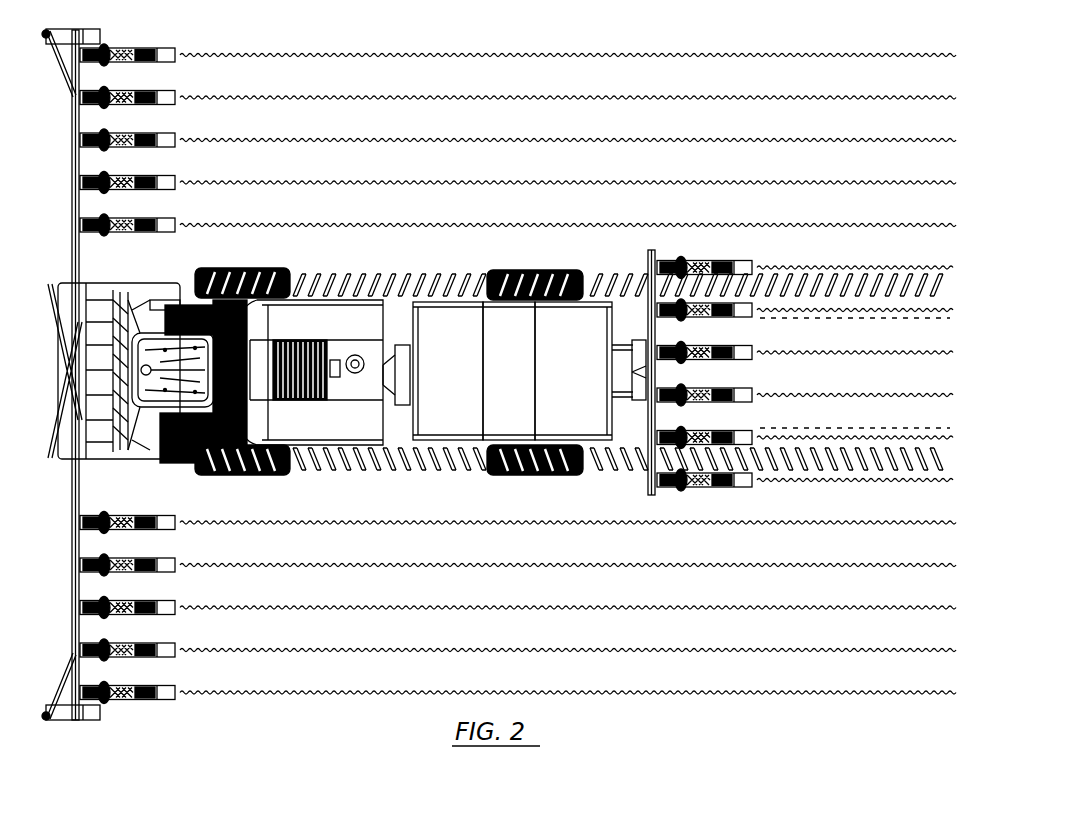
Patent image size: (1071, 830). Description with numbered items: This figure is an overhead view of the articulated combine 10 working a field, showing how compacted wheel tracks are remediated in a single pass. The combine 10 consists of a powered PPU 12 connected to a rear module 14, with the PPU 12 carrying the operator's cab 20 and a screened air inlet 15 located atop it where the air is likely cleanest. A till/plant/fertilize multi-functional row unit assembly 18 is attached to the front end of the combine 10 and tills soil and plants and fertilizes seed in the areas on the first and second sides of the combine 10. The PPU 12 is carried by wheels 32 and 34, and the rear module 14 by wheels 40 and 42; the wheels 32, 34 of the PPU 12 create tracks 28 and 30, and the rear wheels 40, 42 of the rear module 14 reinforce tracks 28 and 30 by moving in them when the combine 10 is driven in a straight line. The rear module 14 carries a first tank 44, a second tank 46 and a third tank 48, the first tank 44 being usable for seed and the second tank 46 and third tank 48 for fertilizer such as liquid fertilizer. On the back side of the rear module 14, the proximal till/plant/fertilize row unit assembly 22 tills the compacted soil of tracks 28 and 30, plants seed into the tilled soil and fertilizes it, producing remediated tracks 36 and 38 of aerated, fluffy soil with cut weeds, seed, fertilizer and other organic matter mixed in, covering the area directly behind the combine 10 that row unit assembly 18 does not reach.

The articulated combine 10 is at (399, 371).
The PPU (crop processing unit) 12 is at (208, 264).
The rear module 14 is at (600, 262).
The screened air inlet 15 is at (298, 403).
The till/plant/fertilize multi-functional row unit assembly 18 is at (163, 44).
The operator's cab 20 is at (172, 340).
The proximal till/plant/fertilize row unit assembly 22 is at (747, 255).
The track 28 is at (398, 292).
The track 30 is at (412, 468).
The wheel 32 is at (268, 268).
The wheel assembly 34 is at (235, 470).
The remediated track 36 is at (815, 272).
The remediated track 38 is at (827, 470).
The wheel 40 is at (533, 290).
The wheel assembly 42 is at (533, 472).
The first tank 44 is at (452, 318).
The second tank 46 is at (497, 327).
The third tank 48 is at (592, 420).